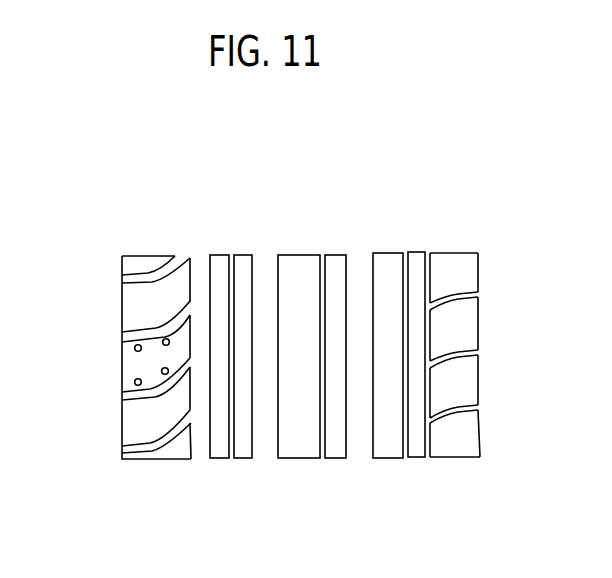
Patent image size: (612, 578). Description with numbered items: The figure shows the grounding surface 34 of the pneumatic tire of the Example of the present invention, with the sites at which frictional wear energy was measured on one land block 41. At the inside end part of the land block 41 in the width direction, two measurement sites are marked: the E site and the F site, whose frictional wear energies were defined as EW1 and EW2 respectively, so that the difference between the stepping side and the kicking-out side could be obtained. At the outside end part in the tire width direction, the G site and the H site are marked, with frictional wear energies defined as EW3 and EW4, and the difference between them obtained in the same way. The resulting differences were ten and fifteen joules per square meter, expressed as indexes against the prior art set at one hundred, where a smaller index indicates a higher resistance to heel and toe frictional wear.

The land block 41 is at (141, 254).
The grounding surface 34 is at (327, 227).
The E site E is at (169, 341).
The F site F is at (165, 374).
The G site G is at (135, 348).
The H site H is at (135, 383).